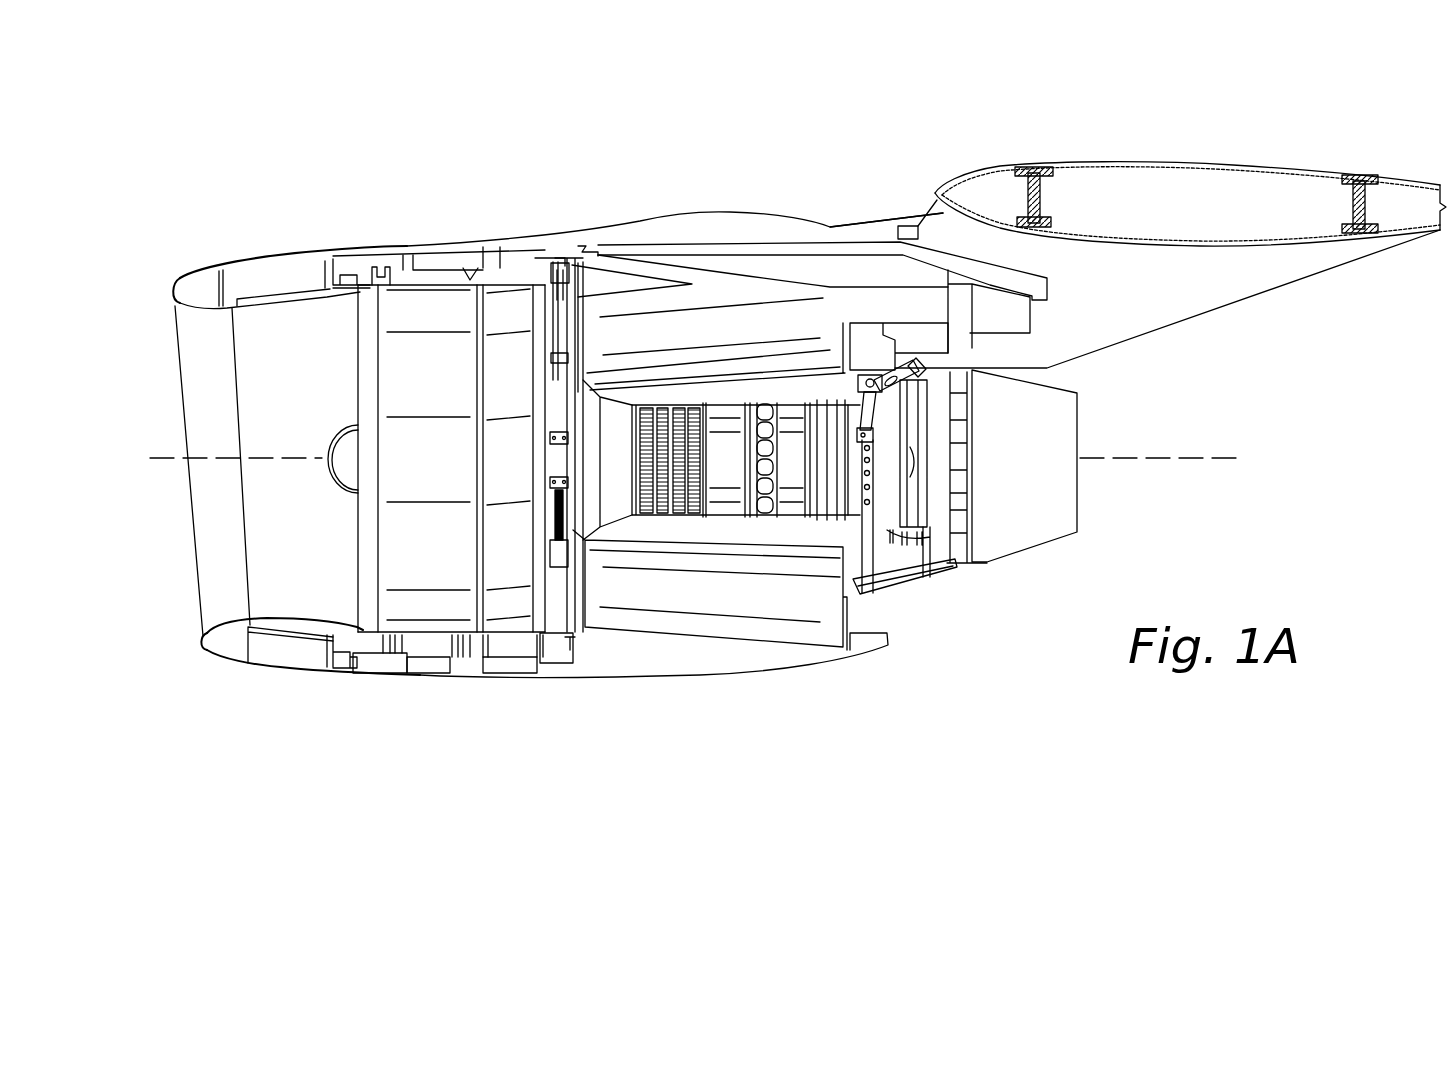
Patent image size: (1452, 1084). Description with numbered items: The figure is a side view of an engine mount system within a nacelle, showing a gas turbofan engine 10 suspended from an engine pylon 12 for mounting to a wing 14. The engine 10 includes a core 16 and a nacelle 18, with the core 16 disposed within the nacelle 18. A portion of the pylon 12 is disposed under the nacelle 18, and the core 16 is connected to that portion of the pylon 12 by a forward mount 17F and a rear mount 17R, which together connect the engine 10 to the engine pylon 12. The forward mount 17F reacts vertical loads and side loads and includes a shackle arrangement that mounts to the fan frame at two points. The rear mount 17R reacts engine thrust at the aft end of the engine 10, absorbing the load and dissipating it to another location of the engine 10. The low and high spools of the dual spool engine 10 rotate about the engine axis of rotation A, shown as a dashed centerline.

The gas turbofan engine 10 is at (320, 160).
The engine pylon 12 is at (908, 222).
The wing 14 is at (1170, 152).
The core 16 is at (716, 533).
The forward mount 17F is at (566, 252).
The rear mount 17R is at (893, 403).
The nacelle 18 is at (314, 690).
The engine axis of rotation A is at (1237, 458).